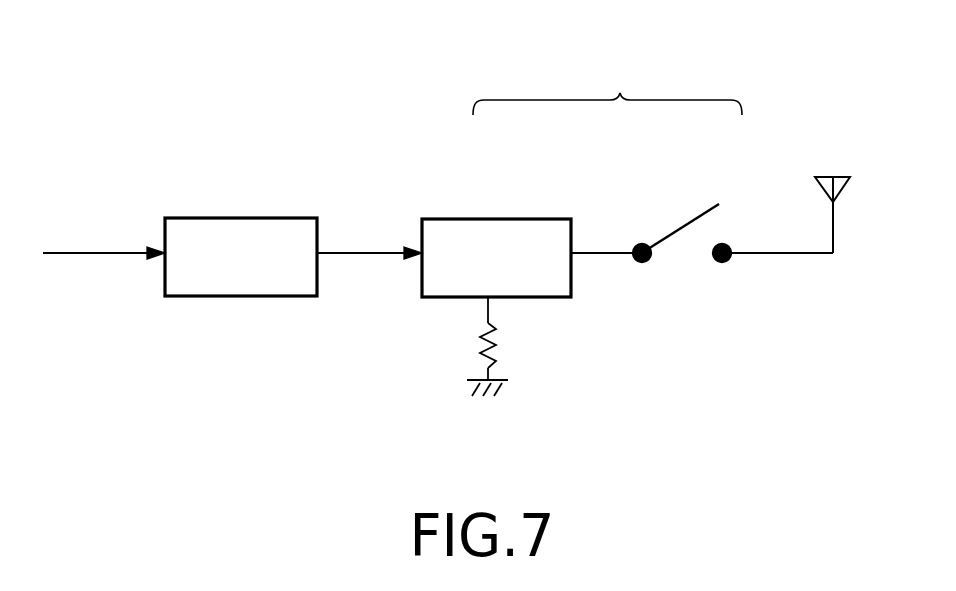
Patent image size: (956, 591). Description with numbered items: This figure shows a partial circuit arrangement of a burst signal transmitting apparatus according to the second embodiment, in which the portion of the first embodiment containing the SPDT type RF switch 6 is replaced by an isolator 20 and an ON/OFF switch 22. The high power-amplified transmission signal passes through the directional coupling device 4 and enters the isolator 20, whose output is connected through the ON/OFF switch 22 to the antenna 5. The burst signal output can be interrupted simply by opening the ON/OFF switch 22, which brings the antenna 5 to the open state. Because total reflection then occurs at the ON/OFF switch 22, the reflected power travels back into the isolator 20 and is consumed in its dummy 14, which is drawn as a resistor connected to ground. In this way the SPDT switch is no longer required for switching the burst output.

The directional coupling device 4 is at (250, 218).
The isolator 20 is at (485, 219).
The RF switch 6 is at (620, 93).
The dummy 14 is at (502, 349).
The ON/OFF switch 22 is at (687, 258).
The antenna 5 is at (830, 177).